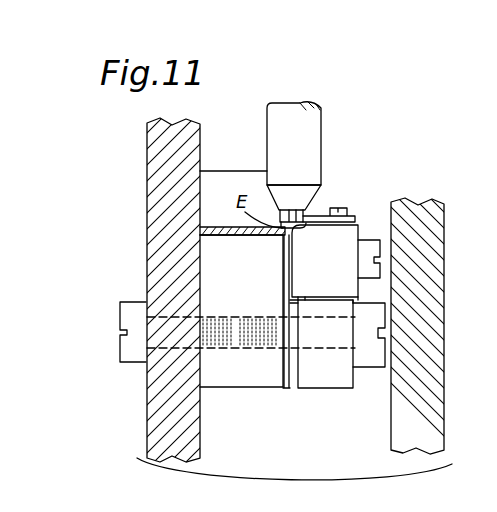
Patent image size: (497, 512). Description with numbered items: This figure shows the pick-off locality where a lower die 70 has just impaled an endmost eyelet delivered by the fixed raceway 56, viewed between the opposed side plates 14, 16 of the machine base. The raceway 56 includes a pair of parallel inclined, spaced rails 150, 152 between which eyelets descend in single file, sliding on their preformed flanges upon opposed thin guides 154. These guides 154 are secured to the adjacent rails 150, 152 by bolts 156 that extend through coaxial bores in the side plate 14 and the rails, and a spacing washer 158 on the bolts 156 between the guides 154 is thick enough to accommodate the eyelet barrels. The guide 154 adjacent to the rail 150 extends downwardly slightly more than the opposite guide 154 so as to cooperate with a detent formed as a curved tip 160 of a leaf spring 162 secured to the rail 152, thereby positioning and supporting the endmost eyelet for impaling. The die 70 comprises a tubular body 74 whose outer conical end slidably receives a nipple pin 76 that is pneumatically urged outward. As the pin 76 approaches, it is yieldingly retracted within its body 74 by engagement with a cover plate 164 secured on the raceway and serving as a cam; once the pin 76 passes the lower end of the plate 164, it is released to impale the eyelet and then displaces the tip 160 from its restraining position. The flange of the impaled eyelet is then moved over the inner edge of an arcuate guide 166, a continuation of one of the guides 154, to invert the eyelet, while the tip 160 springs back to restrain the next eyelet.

The side plate 14 is at (150, 197).
The side plate 16 is at (440, 232).
The raceway 56 is at (419, 198).
The lower die 70 is at (321, 178).
The tubular body 74 is at (300, 164).
The nipple pin 76 is at (302, 213).
The rail 150 is at (213, 390).
The rail 152 is at (345, 390).
The guide 154 is at (300, 392).
The bolt 156 is at (120, 350).
The spacing washer 158 is at (292, 311).
The curved tip 160 is at (338, 284).
The leaf spring 162 is at (359, 230).
The cover plate 164 is at (347, 212).
The arcuate guide 166 is at (229, 237).